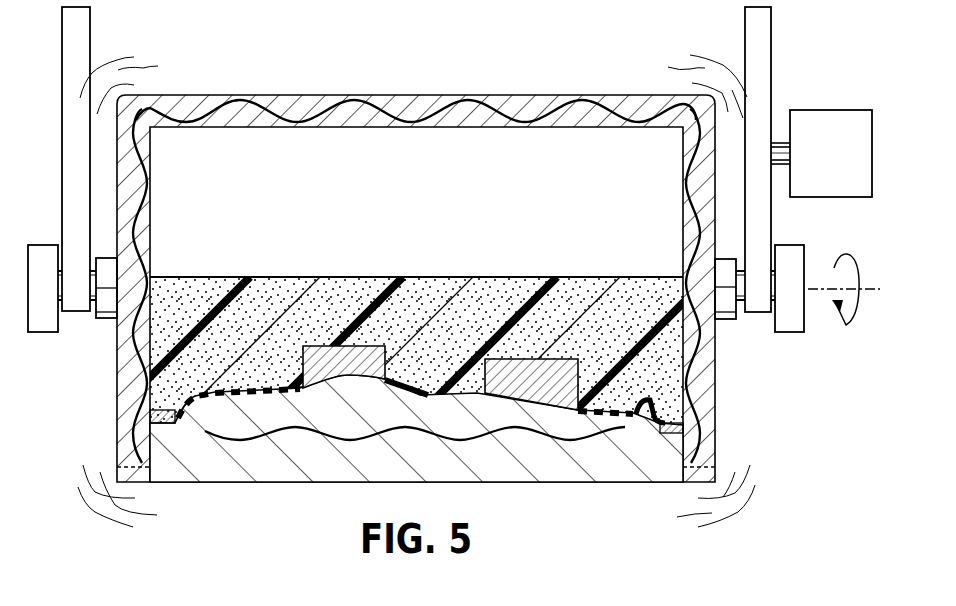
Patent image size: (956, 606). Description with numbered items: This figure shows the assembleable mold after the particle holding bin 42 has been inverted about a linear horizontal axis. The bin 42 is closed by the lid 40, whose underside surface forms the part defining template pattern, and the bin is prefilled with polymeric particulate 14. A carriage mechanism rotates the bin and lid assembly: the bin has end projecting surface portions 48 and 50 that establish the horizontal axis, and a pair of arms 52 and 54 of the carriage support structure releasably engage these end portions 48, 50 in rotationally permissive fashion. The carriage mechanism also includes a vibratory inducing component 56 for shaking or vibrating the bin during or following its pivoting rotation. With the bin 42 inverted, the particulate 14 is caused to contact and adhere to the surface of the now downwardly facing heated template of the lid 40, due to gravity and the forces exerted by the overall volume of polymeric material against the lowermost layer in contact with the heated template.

The particulate 14 is at (280, 295).
The lid 40 is at (318, 476).
The particle holding bin 42 is at (120, 423).
The bin extending end surface portion 48 is at (107, 265).
The bin extending end surface portion 50 is at (722, 316).
The arm 52 is at (78, 47).
The arm 54 is at (757, 42).
The vibratory inducing component 56 is at (825, 122).